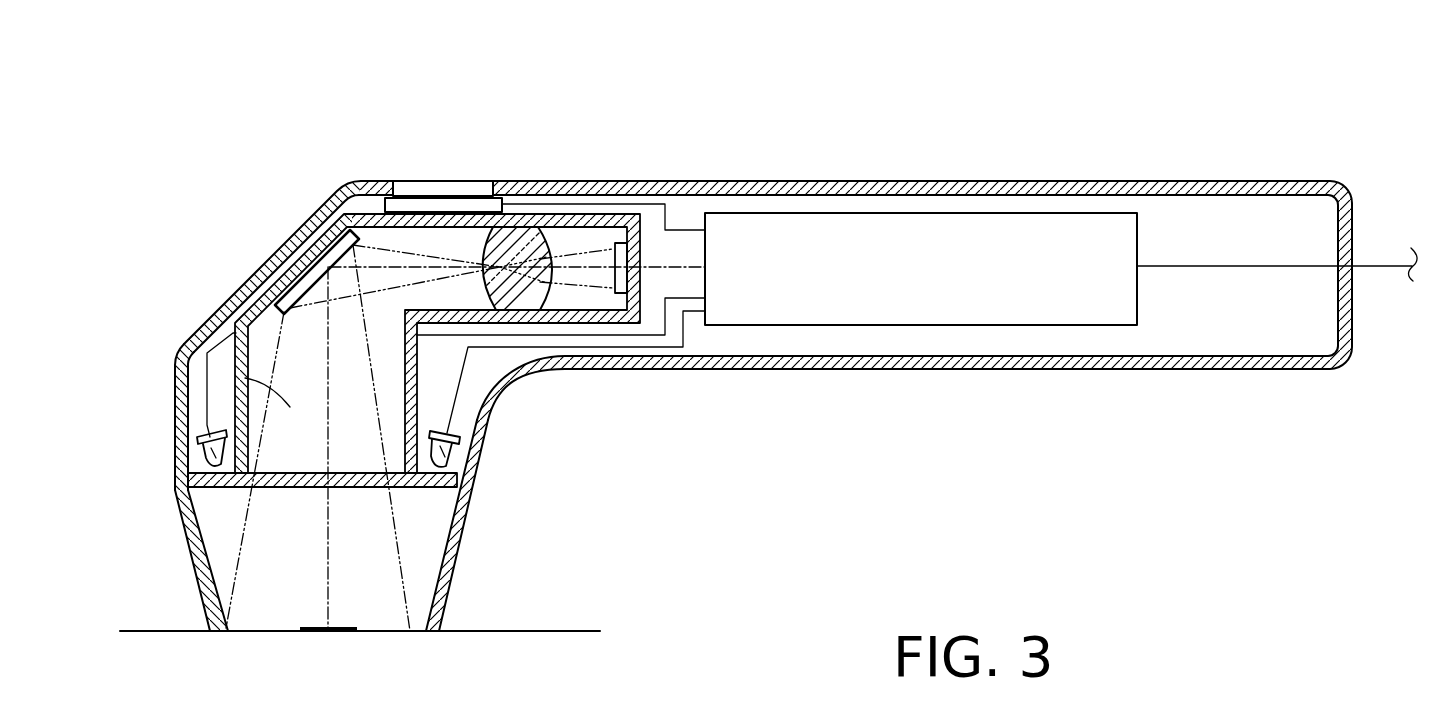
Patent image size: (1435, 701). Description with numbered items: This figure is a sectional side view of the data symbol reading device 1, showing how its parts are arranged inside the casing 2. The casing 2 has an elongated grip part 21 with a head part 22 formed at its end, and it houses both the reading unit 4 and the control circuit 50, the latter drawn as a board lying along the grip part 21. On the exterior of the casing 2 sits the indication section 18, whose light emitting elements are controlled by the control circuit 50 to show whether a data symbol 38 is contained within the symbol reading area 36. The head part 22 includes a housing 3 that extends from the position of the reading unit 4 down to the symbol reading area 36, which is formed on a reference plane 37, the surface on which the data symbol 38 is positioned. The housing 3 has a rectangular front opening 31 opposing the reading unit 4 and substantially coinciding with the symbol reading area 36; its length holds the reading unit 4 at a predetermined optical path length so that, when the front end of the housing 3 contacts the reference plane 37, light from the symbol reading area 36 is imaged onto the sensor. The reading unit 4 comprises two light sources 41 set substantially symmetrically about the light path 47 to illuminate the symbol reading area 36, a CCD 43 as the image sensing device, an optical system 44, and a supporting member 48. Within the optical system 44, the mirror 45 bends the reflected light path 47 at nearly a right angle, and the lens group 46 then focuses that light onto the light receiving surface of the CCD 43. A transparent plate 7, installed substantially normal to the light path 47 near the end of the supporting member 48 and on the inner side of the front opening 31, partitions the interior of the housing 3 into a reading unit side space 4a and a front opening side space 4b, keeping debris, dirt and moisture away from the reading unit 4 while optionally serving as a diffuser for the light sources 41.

The data symbol reading device 1 is at (1000, 88).
The casing 2 is at (1105, 172).
The housing 3 is at (455, 580).
The reading unit 4 is at (312, 239).
The reading unit side space 4a is at (182, 380).
The front opening side space 4b is at (218, 533).
The transparent plate 7 is at (308, 490).
The indication section 18 is at (425, 188).
The grip part 21 is at (1090, 365).
The head part 22 is at (322, 198).
The front opening 31 is at (411, 633).
The symbol reading area 36 is at (250, 632).
The reference plane 37 is at (572, 630).
The data symbol 38 is at (302, 628).
The light source 41 is at (200, 452).
The charge coupled device (CCD) 43 is at (614, 243).
The optical system 44 is at (523, 220).
The mirror 45 is at (290, 280).
The lens group 46 is at (555, 312).
The light path 47 is at (328, 565).
The supporting member 48 is at (243, 313).
The control circuit 50 is at (878, 240).